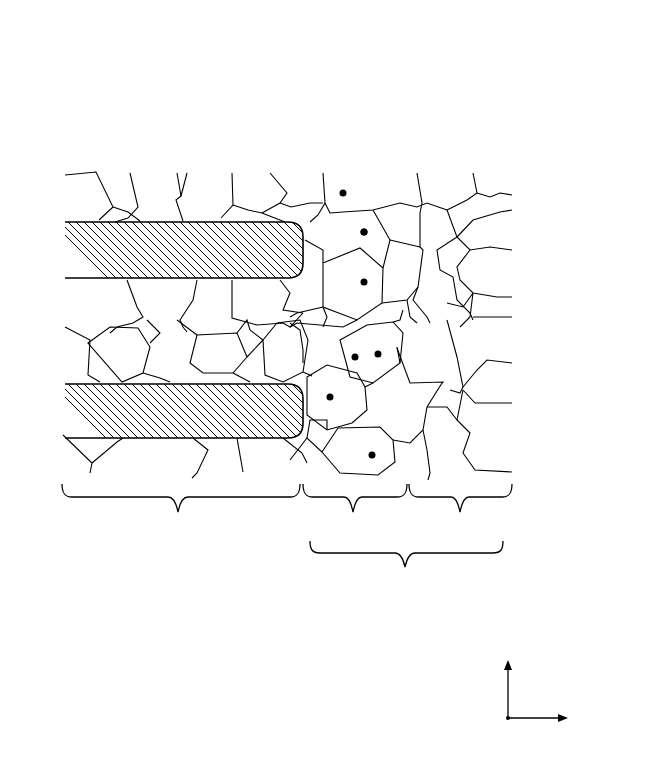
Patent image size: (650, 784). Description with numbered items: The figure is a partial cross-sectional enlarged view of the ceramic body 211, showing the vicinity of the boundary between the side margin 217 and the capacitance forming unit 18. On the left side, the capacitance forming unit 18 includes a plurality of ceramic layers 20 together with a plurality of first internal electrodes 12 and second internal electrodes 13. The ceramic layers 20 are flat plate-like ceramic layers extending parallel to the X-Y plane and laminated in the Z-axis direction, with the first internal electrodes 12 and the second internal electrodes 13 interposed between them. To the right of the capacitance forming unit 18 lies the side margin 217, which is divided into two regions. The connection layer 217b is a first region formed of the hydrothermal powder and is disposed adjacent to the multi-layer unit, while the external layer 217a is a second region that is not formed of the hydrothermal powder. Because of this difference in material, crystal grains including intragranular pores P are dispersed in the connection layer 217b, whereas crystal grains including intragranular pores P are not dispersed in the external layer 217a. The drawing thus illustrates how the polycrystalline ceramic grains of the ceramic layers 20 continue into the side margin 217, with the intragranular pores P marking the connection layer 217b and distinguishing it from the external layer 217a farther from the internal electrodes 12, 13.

The ceramic body 211 is at (312, 85).
The first internal electrode 12 is at (176, 264).
The second internal electrode 13 is at (176, 424).
The ceramic layer 20 is at (176, 209).
The capacitance forming unit 18 is at (181, 515).
The side margin 217 is at (406, 572).
The external layer 217a is at (460, 515).
The connection layer 217b is at (355, 515).
The intragranular pore P is at (365, 228).